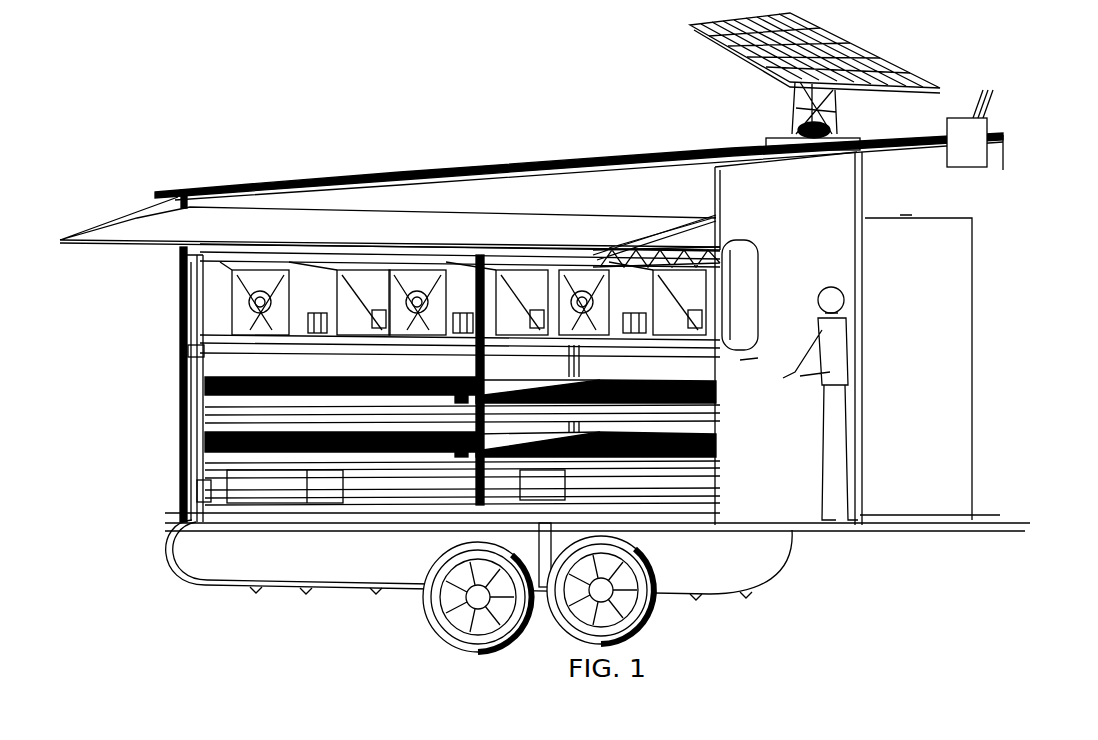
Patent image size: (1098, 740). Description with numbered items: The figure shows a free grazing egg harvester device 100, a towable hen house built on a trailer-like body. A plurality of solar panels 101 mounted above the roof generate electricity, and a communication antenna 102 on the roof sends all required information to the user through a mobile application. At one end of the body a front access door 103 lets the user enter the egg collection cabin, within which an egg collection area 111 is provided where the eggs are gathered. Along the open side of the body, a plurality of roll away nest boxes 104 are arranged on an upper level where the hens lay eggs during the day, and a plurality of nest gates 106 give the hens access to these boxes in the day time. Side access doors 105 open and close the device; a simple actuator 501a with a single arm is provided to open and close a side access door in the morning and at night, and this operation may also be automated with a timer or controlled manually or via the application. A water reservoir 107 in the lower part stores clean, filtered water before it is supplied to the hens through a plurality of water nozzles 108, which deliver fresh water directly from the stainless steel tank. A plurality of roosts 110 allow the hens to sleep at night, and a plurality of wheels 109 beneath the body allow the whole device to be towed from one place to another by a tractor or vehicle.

The free grazing egg harvester device 100 is at (262, 100).
The solar panel 101 is at (858, 54).
The communication antenna 102 is at (990, 133).
The front access door 103 is at (963, 268).
The roll away nest boxes 104 is at (601, 248).
The side access doors 105 is at (135, 218).
The nest gates 106 is at (178, 272).
The water reservoir 107 is at (180, 485).
The water nozzles 108 is at (200, 587).
The wheels 109 is at (424, 603).
The roosts 110 is at (178, 393).
The egg collection area 111 is at (716, 217).
The actuator 501a is at (466, 250).